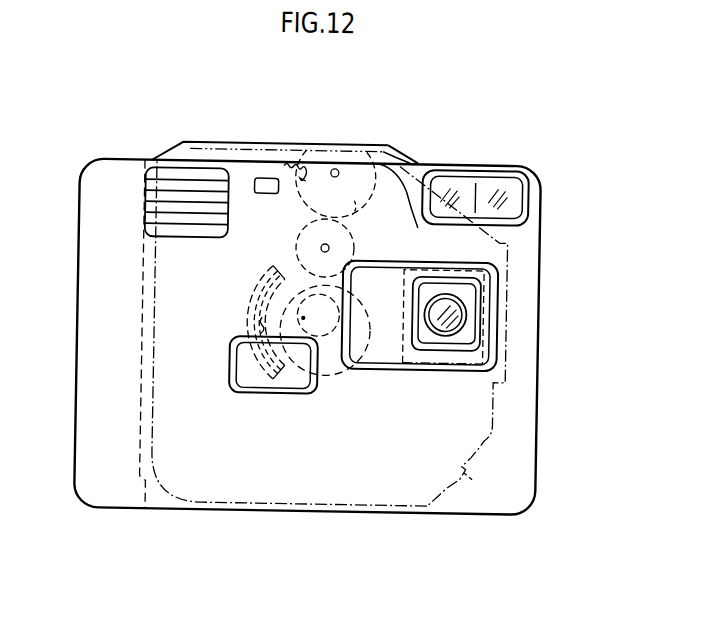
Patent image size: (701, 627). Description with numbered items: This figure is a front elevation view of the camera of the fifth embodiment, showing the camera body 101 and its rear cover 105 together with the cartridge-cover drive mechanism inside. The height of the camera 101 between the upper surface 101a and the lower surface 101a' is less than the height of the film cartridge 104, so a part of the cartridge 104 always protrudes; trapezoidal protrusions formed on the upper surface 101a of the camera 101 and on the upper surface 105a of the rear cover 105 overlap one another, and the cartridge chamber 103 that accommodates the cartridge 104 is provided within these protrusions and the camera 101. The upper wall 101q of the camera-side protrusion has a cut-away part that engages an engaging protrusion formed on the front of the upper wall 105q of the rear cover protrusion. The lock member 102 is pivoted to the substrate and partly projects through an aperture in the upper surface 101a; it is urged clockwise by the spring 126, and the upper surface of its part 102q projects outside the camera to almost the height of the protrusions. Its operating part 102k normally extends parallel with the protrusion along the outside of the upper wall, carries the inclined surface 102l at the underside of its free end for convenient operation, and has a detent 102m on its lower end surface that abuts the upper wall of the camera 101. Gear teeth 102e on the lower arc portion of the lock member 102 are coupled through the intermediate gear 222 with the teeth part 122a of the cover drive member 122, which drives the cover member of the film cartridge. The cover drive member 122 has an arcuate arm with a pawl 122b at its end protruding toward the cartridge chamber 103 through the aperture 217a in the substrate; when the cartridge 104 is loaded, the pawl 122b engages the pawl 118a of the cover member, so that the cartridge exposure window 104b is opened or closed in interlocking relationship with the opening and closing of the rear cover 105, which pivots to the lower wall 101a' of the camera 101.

The camera body 101 is at (299, 281).
The rear cover 105 is at (165, 153).
The upper wall of protrusion 101q is at (271, 117).
The upper wall of rear cover protrusion 105q is at (199, 144).
The lock member 102 is at (327, 152).
The operating part 102k is at (377, 152).
The inclined surface 102l is at (390, 154).
The projecting part of lock member 102q is at (340, 156).
The detent 102m is at (427, 211).
The gear teeth 102e is at (298, 197).
The upper surface 101a is at (510, 166).
The upper surface of rear cover 105a is at (494, 167).
The spring 126 is at (281, 165).
The intermediate gear 222 is at (352, 208).
The teeth part 122a is at (295, 245).
The pawl 122b is at (261, 269).
The pawl of cover member 118a is at (257, 282).
The aperture in substrate 217a is at (257, 326).
The cover drive member 122 is at (335, 358).
The cartridge exposure window 104b is at (408, 338).
The film cartridge 104 is at (475, 490).
The cartridge chamber 103 is at (154, 511).
The lower surface 101a' is at (291, 359).